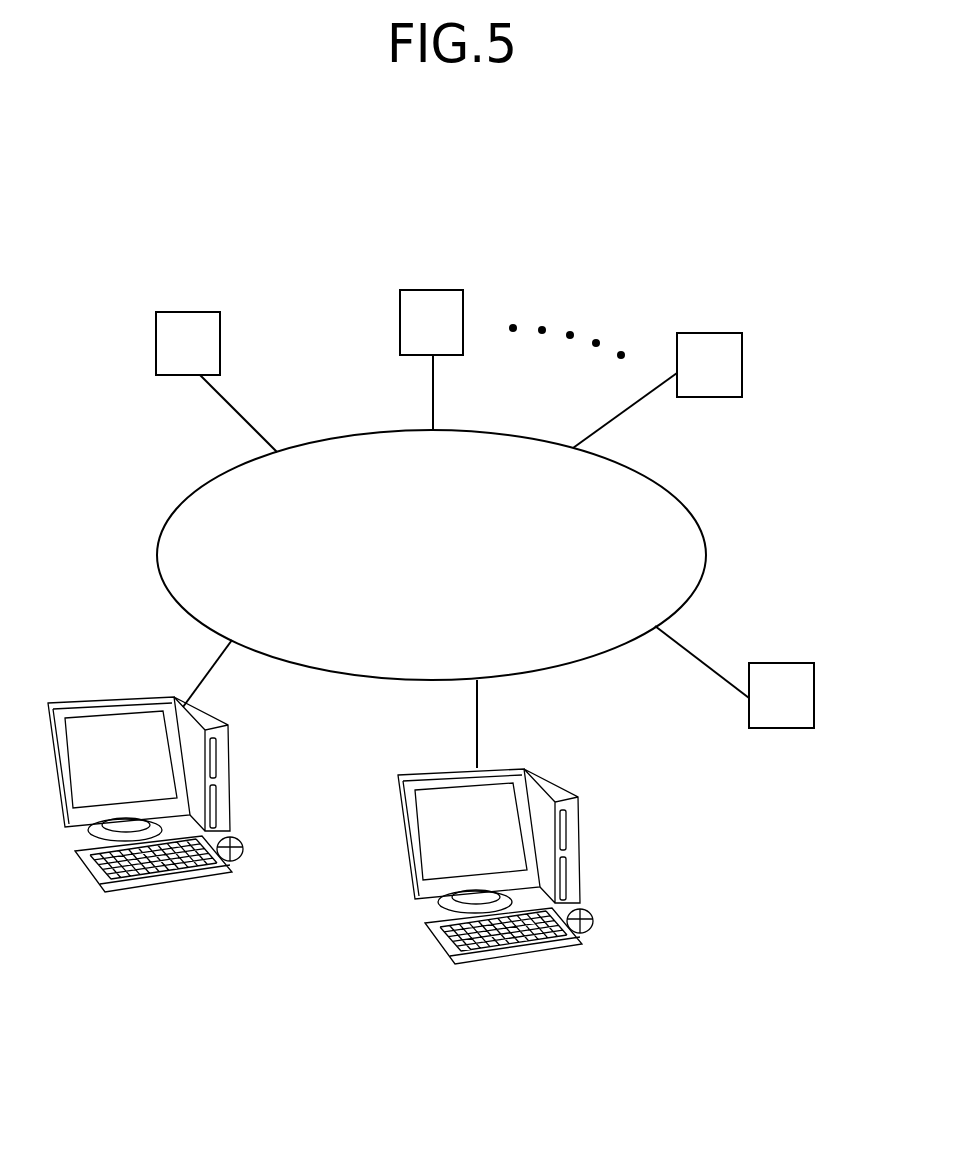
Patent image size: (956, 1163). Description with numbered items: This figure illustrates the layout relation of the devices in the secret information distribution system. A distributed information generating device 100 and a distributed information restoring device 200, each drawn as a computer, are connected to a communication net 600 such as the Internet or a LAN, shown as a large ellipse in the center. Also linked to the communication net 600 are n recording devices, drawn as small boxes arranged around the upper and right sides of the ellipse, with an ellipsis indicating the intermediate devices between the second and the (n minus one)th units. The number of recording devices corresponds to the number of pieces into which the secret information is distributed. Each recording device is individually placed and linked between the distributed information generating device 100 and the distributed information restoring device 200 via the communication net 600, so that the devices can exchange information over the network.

The distributed information generating device 100 is at (232, 785).
The distributed information restoring device 200 is at (582, 838).
The communication net 600 is at (162, 537).